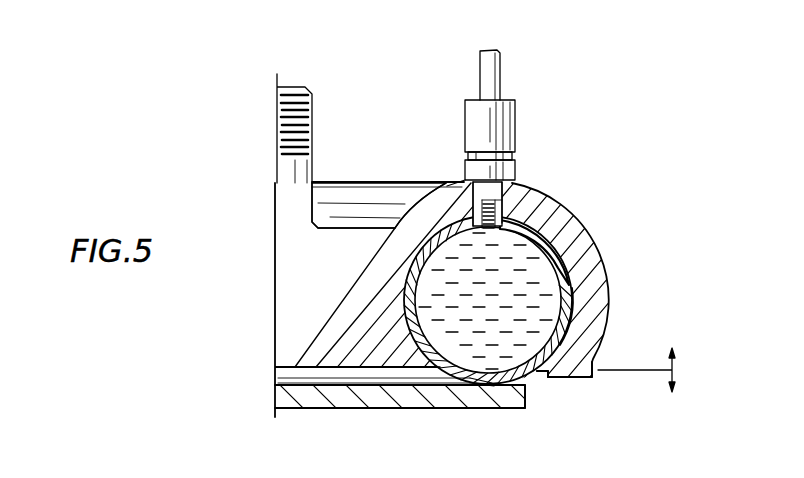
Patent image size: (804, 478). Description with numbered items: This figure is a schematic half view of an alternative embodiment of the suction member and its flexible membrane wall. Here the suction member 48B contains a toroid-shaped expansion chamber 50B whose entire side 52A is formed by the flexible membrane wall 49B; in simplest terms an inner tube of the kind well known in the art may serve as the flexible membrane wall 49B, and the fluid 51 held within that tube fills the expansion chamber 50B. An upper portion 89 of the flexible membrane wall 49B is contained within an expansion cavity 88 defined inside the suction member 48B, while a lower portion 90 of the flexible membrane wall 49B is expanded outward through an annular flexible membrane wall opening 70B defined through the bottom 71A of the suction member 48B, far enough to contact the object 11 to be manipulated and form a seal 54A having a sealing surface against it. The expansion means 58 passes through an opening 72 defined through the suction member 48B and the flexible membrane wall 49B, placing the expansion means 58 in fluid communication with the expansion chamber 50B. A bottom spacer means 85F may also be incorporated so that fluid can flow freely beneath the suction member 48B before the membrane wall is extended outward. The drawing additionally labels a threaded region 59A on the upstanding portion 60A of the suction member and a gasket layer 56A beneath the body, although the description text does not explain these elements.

The object to be manipulated 11 is at (424, 409).
The suction member 48B is at (378, 106).
The flexible membrane wall 49B is at (531, 373).
The expansion chamber 50B is at (569, 283).
The fluid 51 is at (533, 259).
The side of the expansion chamber 52A is at (540, 210).
The seal 54A is at (492, 410).
The gasket 56A is at (372, 395).
The expansion means 58 is at (538, 92).
The threads 59A is at (280, 86).
The threaded post 60A is at (277, 78).
The flexible membrane wall opening 70B is at (540, 416).
The bottom of the suction member 71A is at (325, 368).
The opening 72 is at (518, 226).
The bottom spacer means 85F is at (590, 378).
The expansion cavity 88 is at (572, 315).
The upper portion of the flexible membrane wall 89 is at (651, 363).
The lower portion of the flexible membrane wall 90 is at (686, 395).